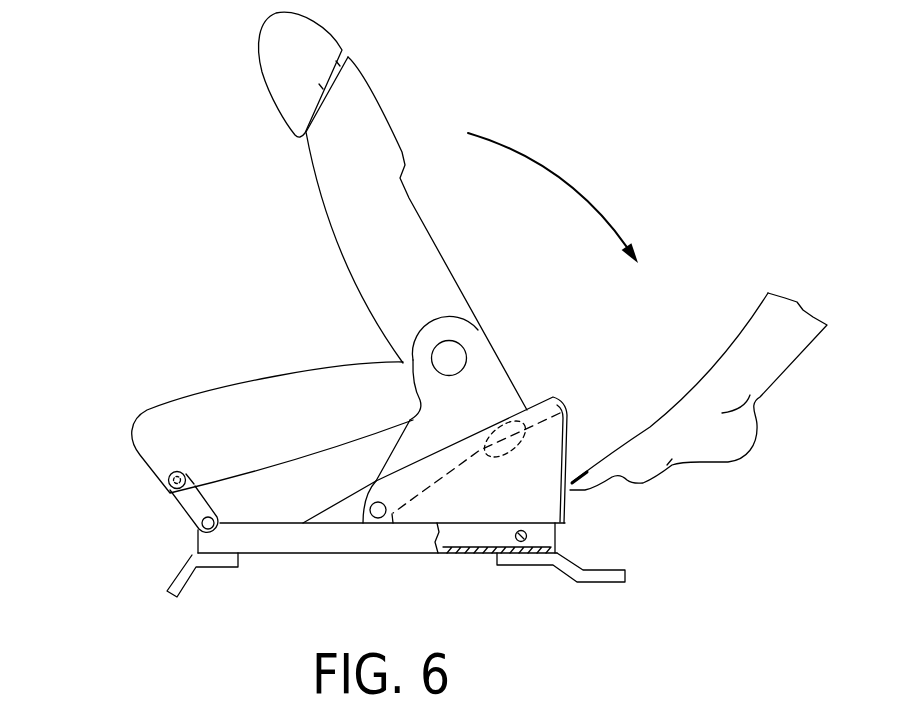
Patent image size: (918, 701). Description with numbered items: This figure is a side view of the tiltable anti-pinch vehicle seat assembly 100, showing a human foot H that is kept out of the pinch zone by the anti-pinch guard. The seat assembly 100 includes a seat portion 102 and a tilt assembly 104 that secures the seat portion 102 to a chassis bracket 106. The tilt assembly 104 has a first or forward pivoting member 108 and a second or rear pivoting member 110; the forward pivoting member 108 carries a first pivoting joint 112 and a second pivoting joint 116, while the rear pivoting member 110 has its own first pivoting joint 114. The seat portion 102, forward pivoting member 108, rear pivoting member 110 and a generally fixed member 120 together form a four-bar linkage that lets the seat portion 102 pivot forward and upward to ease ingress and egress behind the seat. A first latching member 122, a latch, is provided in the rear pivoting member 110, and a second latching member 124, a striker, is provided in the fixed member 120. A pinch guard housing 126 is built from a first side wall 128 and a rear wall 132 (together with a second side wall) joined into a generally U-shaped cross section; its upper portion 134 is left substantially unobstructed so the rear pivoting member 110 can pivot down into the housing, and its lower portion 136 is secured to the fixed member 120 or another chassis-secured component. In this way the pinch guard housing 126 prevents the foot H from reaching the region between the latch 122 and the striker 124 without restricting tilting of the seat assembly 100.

The tiltable anti-pinch vehicle seat assembly 100 is at (151, 111).
The seat portion 102 is at (244, 337).
The tilt assembly 104 is at (176, 526).
The chassis bracket 106 is at (173, 592).
The first or forward pivoting member 108 is at (193, 502).
The second or rear pivoting member 110 is at (493, 382).
The first pivoting joint 112 is at (158, 480).
The first pivoting joint 114 is at (450, 349).
The second pivoting joint 116 is at (212, 529).
The generally fixed member 120 is at (287, 540).
The first latching member 122 is at (566, 407).
The second latching member 124 is at (523, 542).
The pinch guard housing 126 is at (588, 430).
The first side wall 128 is at (540, 497).
The rear wall 132 is at (567, 493).
The upper portion 134 is at (472, 409).
The lower portion 136 is at (469, 540).
The human foot H is at (768, 367).